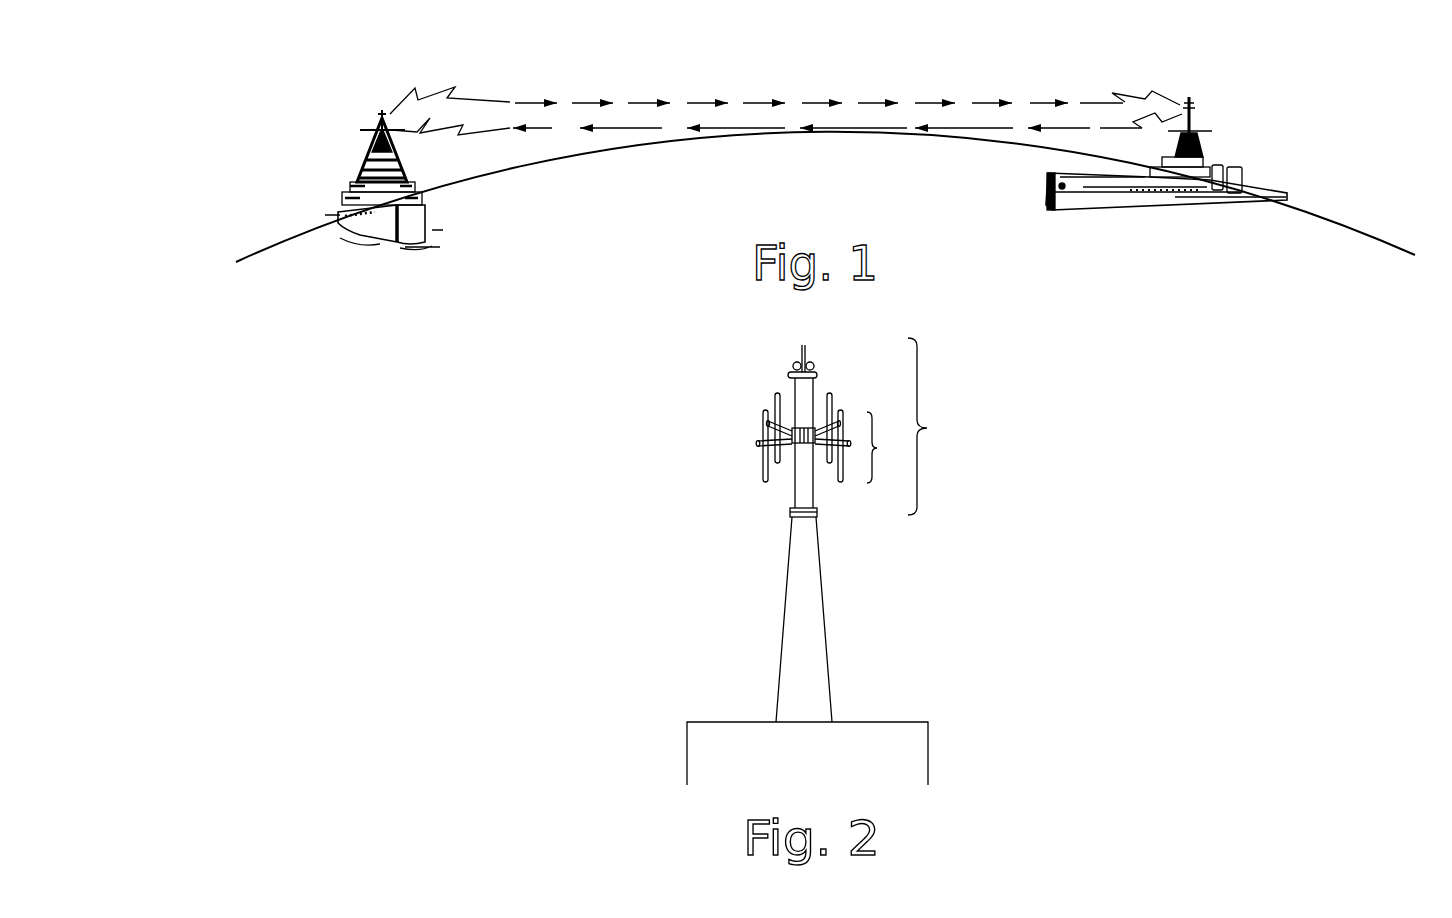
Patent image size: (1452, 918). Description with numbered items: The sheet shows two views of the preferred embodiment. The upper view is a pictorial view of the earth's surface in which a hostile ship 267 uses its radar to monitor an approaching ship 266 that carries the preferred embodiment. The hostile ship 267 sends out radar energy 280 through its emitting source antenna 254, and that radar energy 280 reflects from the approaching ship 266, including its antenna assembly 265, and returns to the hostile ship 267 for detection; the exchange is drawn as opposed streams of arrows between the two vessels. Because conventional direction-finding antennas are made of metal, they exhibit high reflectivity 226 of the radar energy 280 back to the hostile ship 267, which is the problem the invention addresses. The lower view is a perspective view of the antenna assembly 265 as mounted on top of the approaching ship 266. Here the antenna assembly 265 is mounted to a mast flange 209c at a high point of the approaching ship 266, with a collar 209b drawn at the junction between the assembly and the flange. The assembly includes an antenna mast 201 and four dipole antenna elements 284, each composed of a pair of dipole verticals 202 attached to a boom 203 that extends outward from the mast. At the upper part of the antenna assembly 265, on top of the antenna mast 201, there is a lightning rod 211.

In FIG. 1, the emitting source antenna 254 is at (365, 122).
In FIG. 1, the hostile ship 267 is at (340, 210).
In FIG. 1, the radar energy 280 is at (757, 102).
In FIG. 1, the reflectivity 226 is at (983, 128).
In FIG. 1, the antenna assembly 265 is at (1212, 122).
In FIG. 2, the antenna assembly 265 is at (821, 435).
In FIG. 1, the approaching ship 266 is at (1243, 168).
In FIG. 2, the approaching ship 266 is at (675, 705).
In FIG. 2, the lightning rod 211 is at (803, 352).
In FIG. 2, the antenna mast 201 is at (797, 393).
In FIG. 2, the dipole verticals 202 is at (763, 465).
In FIG. 2, the boom 203 is at (773, 473).
In FIG. 2, the dipole antenna elements 284 is at (792, 464).
In FIG. 2, the mounting collar 209b is at (817, 510).
In FIG. 2, the mast flange 209c is at (817, 517).